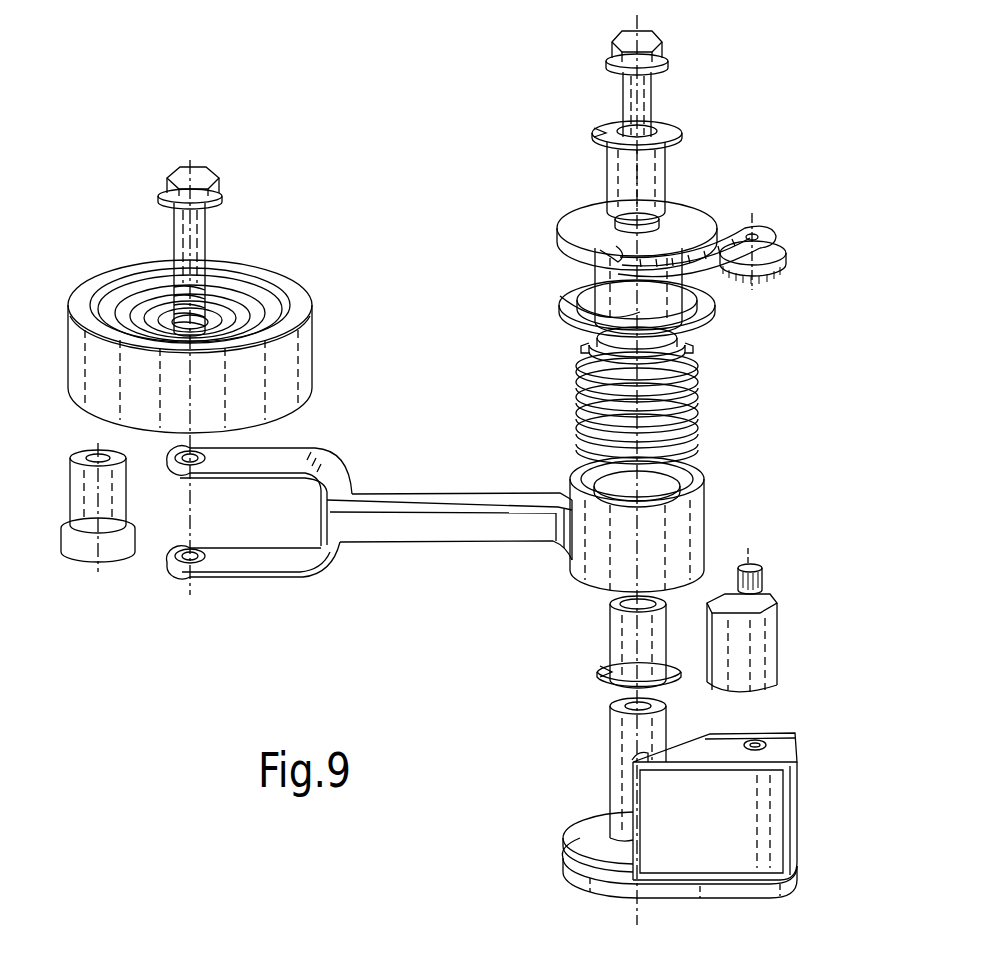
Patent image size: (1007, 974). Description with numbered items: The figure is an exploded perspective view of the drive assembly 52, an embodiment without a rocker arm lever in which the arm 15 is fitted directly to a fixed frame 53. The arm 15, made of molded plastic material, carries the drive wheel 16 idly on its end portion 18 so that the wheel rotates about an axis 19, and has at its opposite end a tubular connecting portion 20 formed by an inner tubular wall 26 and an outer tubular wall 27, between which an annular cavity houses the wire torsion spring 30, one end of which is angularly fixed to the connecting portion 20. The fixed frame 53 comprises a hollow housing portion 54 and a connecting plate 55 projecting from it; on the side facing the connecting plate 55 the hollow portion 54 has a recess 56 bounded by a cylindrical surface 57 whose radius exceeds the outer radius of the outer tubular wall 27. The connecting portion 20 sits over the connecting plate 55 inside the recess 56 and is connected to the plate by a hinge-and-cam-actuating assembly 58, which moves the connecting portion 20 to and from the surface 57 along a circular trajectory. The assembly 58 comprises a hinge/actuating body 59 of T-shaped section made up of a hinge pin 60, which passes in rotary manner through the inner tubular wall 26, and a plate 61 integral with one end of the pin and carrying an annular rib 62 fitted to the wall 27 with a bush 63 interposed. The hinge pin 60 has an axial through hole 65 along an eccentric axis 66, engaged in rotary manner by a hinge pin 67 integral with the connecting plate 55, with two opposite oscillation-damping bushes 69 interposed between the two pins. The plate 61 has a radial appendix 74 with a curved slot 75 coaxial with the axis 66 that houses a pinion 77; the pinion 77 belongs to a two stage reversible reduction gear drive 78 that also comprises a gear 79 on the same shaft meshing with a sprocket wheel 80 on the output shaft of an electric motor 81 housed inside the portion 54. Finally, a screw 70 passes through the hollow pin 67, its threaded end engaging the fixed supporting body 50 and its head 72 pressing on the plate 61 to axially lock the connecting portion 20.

The arm 15 is at (455, 548).
The drive wheel 16 is at (292, 352).
The end portion 18 is at (343, 548).
The axis 19 is at (193, 512).
The tubular connecting portion 20 is at (715, 492).
The inner tubular wall 26 is at (662, 482).
The outer tubular wall 27 is at (688, 542).
The wire torsion spring 30 is at (697, 400).
The fixed supporting body 50 is at (658, 893).
The drive assembly 52 is at (410, 217).
The fixed frame 53 is at (805, 775).
The hollow housing portion 54 is at (772, 838).
The connecting plate 55 is at (590, 835).
The recess 56 is at (684, 746).
The cylindrical surface 57 is at (698, 760).
The hinge-and-cam-actuating assembly 58 is at (733, 216).
The hinge/actuating body 59 is at (560, 262).
The hinge pin 60 is at (690, 340).
The plate 61 is at (585, 218).
The annular rib 62 is at (565, 246).
The bush 63 is at (566, 304).
The axial through hole 65 is at (745, 192).
The eccentric axis 66 is at (673, 172).
The hinge pin 67 is at (615, 737).
The oscillation-damping bushes 69 is at (613, 170).
The screw 70 is at (651, 92).
The head 72 is at (652, 42).
The radial appendix 74 is at (688, 284).
The curved slot 75 is at (722, 228).
The pinion 77 is at (772, 250).
The two stage reversible reduction gear drive 78 is at (777, 268).
The gear 79 is at (764, 280).
The sprocket wheel 80 is at (752, 566).
The electric motor 81 is at (760, 652).